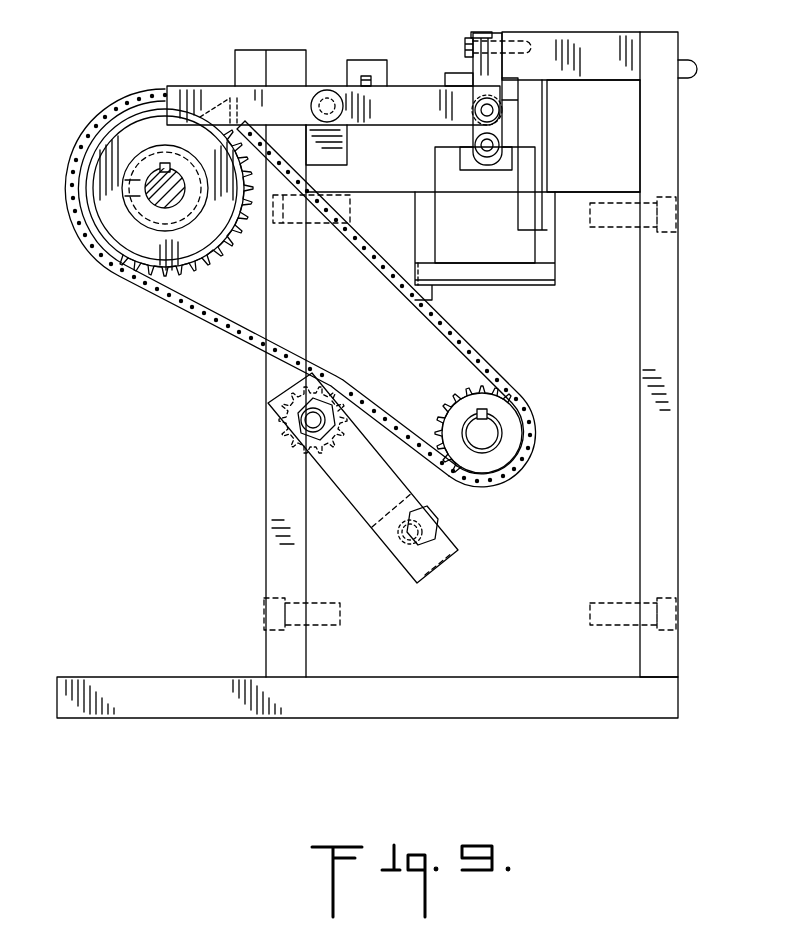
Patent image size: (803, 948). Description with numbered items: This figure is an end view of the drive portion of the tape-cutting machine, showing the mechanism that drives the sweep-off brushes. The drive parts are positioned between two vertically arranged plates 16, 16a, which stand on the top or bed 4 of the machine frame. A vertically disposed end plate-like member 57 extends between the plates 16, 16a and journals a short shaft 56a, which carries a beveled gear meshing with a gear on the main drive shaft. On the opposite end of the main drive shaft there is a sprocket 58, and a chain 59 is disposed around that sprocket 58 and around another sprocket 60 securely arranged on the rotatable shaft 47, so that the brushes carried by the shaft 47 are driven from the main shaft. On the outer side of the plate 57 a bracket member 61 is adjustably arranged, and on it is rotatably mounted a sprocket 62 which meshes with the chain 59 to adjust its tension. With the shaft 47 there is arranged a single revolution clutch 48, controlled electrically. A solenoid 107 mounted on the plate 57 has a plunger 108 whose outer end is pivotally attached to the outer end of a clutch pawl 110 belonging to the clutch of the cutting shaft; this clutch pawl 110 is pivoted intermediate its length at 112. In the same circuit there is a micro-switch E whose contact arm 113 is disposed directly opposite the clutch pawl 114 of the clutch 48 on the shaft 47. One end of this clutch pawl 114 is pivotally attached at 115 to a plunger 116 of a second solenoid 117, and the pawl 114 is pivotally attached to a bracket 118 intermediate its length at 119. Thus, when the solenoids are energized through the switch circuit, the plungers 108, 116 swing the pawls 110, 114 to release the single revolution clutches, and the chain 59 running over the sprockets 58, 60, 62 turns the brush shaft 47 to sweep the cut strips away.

The bed 4 is at (325, 712).
The vertically disposed plate-like member 16 is at (267, 468).
The vertically arranged plate 16a is at (667, 451).
The rotatable shaft 47 is at (153, 188).
The single revolution clutch 48 is at (123, 135).
The short shaft 56a is at (490, 432).
The vertically disposed end plate-like member 57 is at (612, 521).
The sprocket 58 is at (510, 452).
The chain 59 is at (472, 348).
The sprocket 60 is at (117, 250).
The bracket member 61 is at (360, 496).
The sprocket 62 is at (280, 430).
The solenoid 107 is at (525, 97).
The plunger 108 is at (503, 40).
The clutch pawl 110 is at (484, 38).
The pivot 112 is at (467, 49).
The contact arm 113 is at (370, 74).
The clutch pawl 114 is at (411, 95).
The pivotal attachment 115 is at (490, 112).
The plunger 116 is at (505, 157).
The solenoid 117 is at (510, 243).
The bracket 118 is at (338, 161).
The pivot 119 is at (329, 96).
The micro-switch E is at (380, 67).